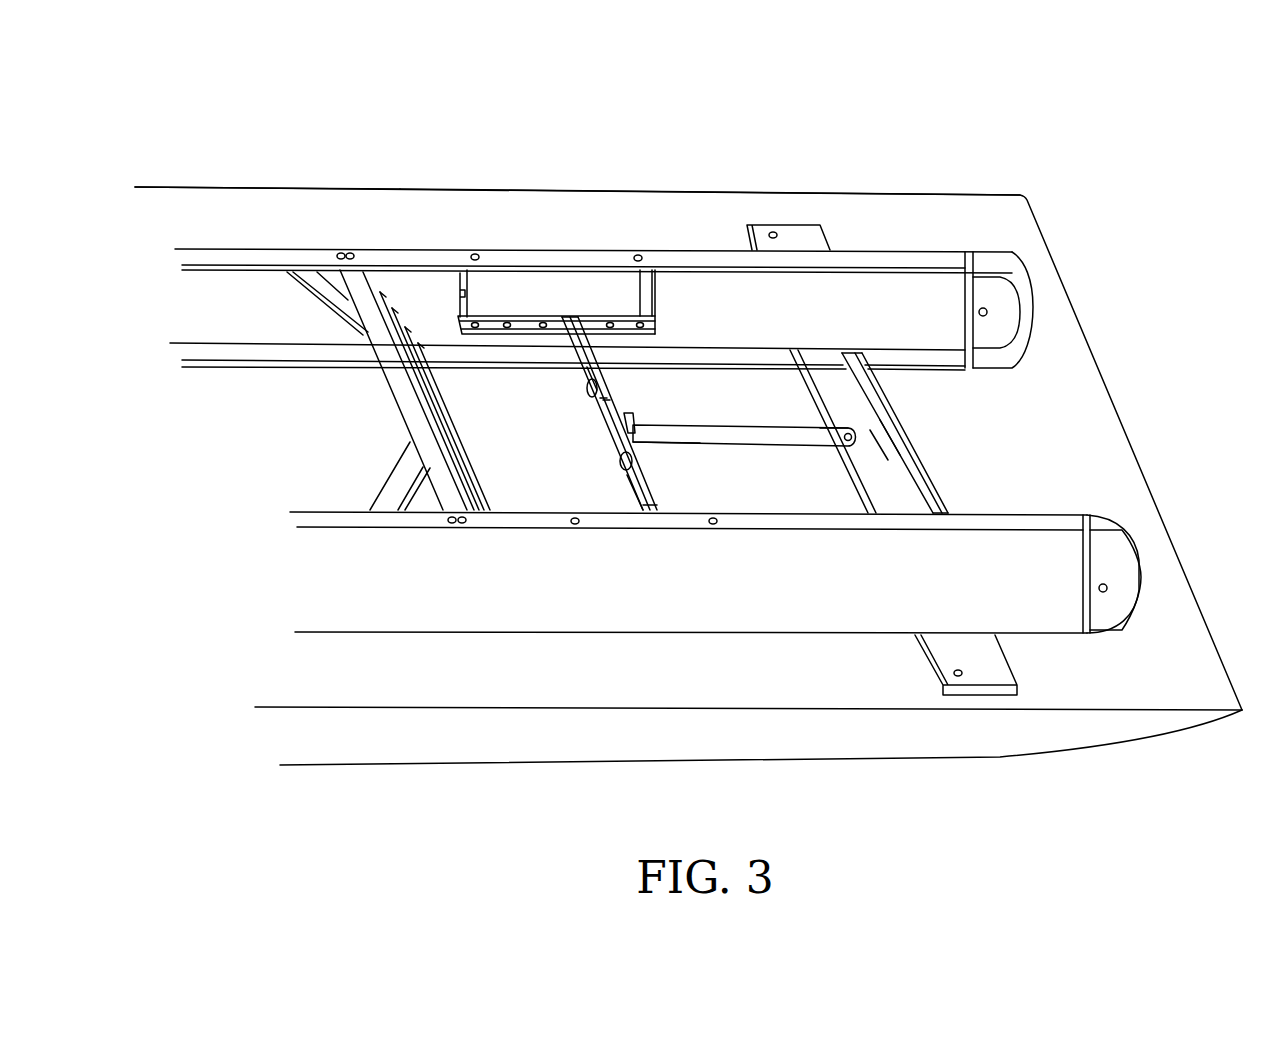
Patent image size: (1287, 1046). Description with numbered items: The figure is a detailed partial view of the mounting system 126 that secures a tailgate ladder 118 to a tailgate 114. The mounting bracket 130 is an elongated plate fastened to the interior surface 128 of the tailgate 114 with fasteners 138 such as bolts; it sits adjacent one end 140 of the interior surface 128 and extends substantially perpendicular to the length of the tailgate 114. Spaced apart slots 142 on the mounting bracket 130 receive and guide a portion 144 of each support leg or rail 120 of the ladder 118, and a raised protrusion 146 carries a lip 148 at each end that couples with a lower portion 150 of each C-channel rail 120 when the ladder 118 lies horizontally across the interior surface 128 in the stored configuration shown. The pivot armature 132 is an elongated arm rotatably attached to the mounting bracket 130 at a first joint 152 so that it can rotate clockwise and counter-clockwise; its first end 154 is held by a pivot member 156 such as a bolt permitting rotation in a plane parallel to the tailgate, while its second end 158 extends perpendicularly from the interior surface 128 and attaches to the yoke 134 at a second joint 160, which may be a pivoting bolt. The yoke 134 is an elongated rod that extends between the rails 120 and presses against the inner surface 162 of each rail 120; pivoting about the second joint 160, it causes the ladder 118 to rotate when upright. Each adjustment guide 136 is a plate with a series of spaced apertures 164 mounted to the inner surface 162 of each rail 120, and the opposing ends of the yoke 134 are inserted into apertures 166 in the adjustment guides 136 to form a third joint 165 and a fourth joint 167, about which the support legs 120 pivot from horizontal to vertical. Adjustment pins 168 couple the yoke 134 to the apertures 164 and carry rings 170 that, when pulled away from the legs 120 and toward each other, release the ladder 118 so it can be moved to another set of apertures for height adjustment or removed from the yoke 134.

The tailgate 114 is at (723, 680).
The ladder 118 is at (821, 583).
The support leg or rail 120 is at (882, 300).
The mounting system 126 is at (665, 97).
The interior surface 128 is at (1040, 437).
The mounting bracket 130 is at (983, 655).
The pivot armature 132 is at (743, 433).
The yoke 134 is at (603, 397).
The adjustment guide 136 is at (497, 296).
The fastener 138 is at (773, 232).
The end of interior side 140 is at (830, 205).
The slot 142 is at (878, 352).
The portion of support leg 144 is at (817, 400).
The raised protrusion 146 is at (890, 441).
The lip 148 is at (858, 350).
The lower portion of rail 150 is at (807, 355).
The first joint 152 is at (875, 420).
The first end of pivot armature 154 is at (828, 437).
The pivot member 156 is at (888, 440).
The second end of pivot armature 158 is at (647, 433).
The second joint 160 is at (637, 425).
The inner surface of rail 162 is at (700, 283).
The apertures / opposing ends of yoke 164 is at (575, 308).
The third joint 165 is at (555, 337).
The aperture 166 is at (645, 308).
The fourth joint 167 is at (622, 503).
The adjustment pin 168 is at (587, 367).
The ring 170 is at (589, 397).